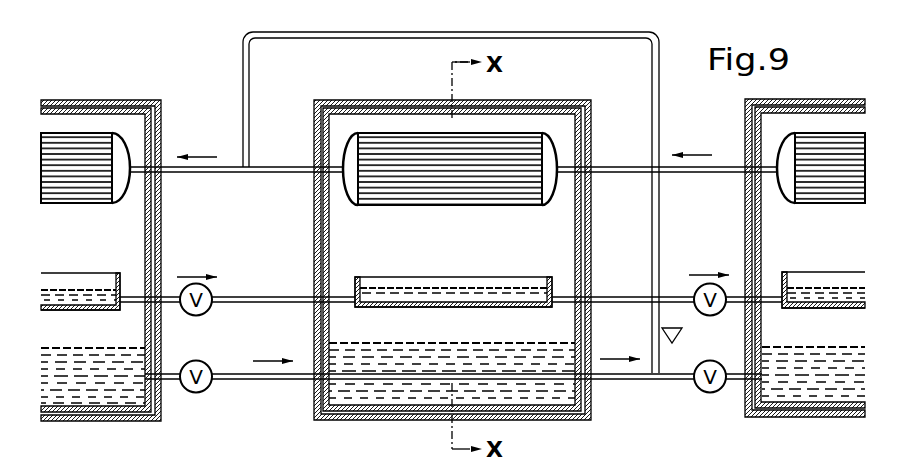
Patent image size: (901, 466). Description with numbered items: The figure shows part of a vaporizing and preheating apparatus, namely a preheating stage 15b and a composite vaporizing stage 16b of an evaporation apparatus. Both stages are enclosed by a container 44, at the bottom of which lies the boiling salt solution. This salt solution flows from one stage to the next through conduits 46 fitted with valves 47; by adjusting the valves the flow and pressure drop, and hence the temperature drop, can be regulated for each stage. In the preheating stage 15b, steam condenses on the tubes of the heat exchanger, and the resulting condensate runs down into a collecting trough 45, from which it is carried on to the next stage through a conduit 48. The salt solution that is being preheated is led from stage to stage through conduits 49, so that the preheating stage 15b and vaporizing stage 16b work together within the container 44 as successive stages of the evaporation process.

The preheating stage 15b is at (410, 187).
The composite vaporizing stage 16b is at (418, 388).
The container 44 is at (319, 331).
The collecting trough 45 is at (415, 306).
The conduit 46 is at (672, 381).
The valve 47 is at (716, 393).
The conduit 48 is at (677, 296).
The conduit 49 is at (727, 166).